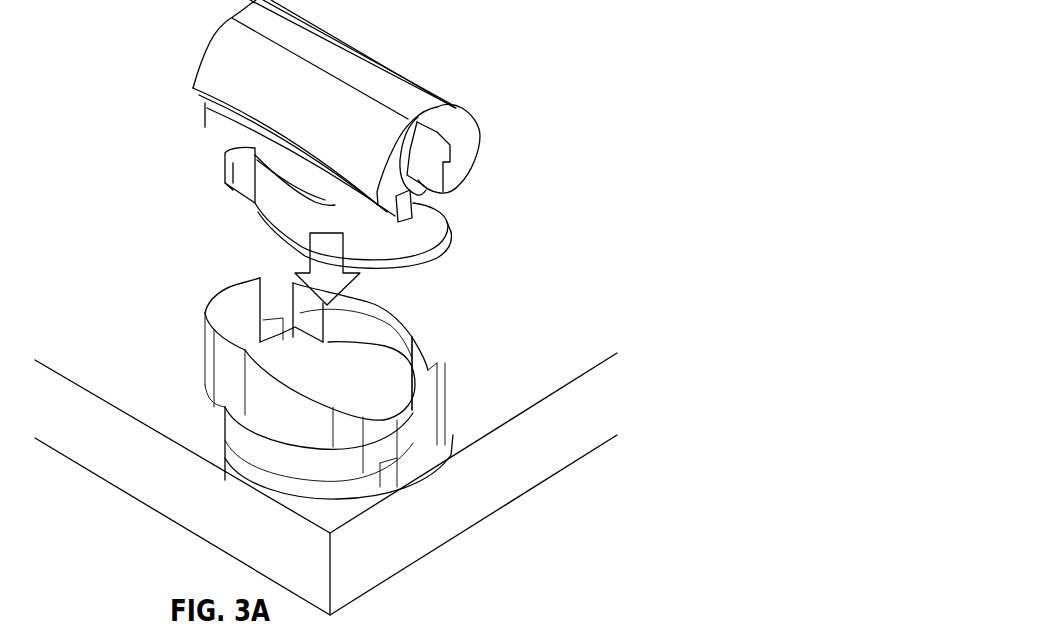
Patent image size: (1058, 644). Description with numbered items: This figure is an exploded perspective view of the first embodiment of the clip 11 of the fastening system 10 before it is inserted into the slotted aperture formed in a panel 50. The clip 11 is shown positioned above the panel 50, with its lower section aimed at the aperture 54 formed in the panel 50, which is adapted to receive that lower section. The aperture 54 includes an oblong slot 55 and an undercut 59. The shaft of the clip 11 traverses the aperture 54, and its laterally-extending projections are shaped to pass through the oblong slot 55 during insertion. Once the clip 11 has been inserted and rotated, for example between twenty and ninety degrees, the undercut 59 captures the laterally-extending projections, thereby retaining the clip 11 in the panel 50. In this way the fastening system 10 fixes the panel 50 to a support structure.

The fastening system 10 is at (545, 268).
The clip 11 is at (480, 125).
The panel 50 is at (497, 407).
The aperture 54 is at (372, 381).
The oblong slot 55 is at (307, 302).
The undercut 59 is at (303, 488).